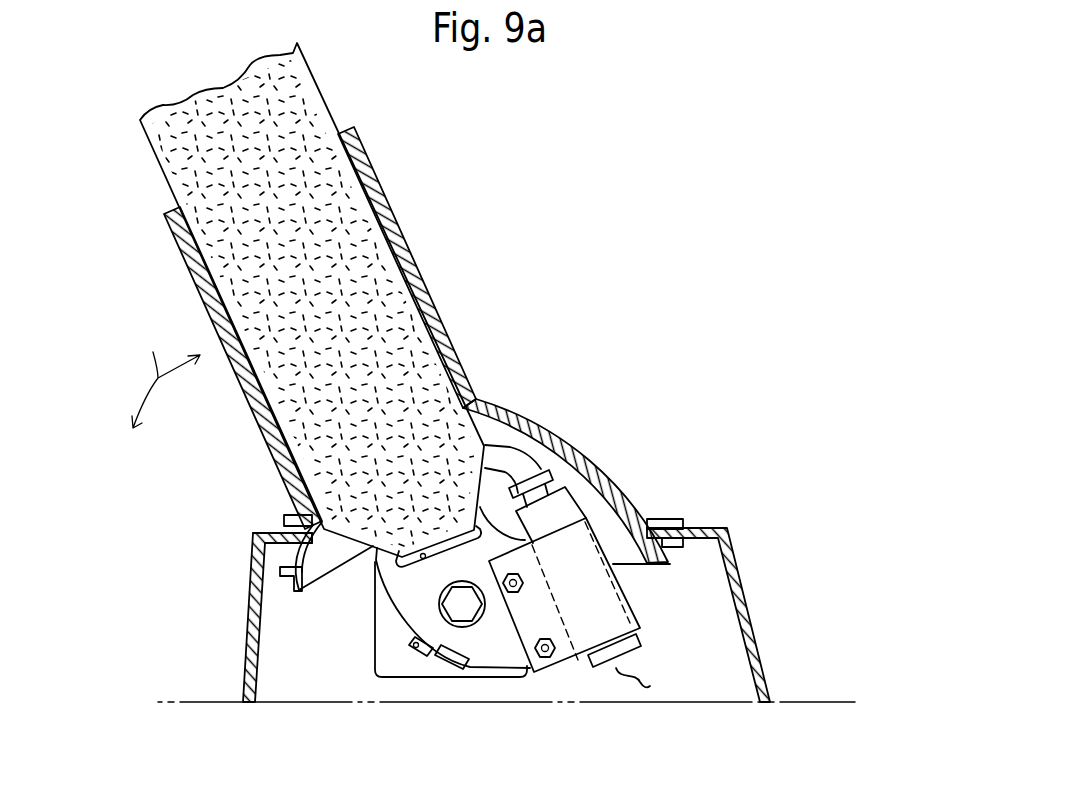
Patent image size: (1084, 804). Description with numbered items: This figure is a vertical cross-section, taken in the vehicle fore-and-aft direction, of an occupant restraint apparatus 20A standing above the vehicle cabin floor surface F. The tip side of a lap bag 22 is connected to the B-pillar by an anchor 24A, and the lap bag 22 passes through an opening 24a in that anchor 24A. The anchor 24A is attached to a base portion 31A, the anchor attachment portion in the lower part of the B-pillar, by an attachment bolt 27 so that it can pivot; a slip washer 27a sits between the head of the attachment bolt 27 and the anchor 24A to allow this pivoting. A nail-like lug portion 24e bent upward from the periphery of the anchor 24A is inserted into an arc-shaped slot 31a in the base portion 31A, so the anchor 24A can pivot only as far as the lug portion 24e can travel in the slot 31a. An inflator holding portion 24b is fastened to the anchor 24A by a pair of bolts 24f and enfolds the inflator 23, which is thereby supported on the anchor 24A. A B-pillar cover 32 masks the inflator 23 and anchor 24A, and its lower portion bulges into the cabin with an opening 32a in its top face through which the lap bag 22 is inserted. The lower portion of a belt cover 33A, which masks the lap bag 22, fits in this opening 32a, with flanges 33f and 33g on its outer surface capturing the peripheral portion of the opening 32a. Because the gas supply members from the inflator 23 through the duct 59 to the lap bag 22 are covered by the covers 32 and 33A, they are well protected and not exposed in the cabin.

The occupant restraint apparatus 20A is at (620, 313).
The lap bag 22 is at (308, 63).
The belt cover 33A is at (412, 255).
The duct 59 is at (510, 465).
The inflator 23 is at (565, 507).
The anchor 24A is at (513, 657).
The opening 24a is at (428, 563).
The slip washer 27a is at (445, 583).
The attachment bolt 27 is at (463, 610).
The bolts 24f is at (548, 640).
The lug portion 24e is at (428, 663).
The slot 31a is at (414, 650).
The inflator holding portion 24b is at (595, 642).
The base portion 31A is at (383, 636).
The B-pillar cover 32 is at (745, 578).
The opening 32a is at (296, 532).
The flange 33f is at (284, 512).
The flange 33g is at (284, 576).
The floor surface F is at (176, 701).